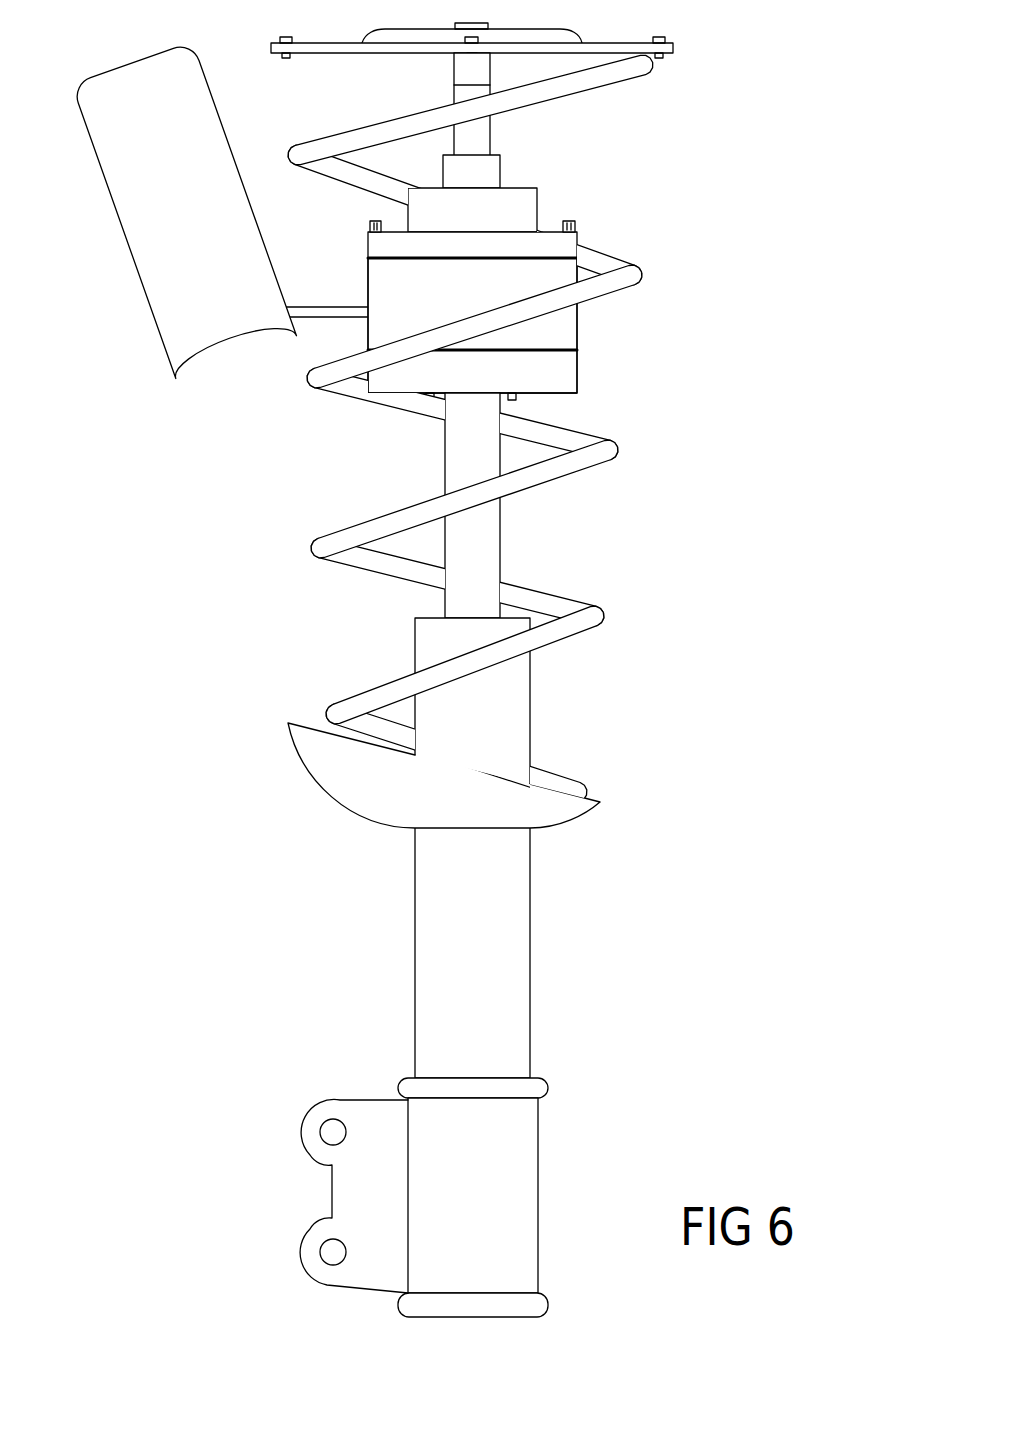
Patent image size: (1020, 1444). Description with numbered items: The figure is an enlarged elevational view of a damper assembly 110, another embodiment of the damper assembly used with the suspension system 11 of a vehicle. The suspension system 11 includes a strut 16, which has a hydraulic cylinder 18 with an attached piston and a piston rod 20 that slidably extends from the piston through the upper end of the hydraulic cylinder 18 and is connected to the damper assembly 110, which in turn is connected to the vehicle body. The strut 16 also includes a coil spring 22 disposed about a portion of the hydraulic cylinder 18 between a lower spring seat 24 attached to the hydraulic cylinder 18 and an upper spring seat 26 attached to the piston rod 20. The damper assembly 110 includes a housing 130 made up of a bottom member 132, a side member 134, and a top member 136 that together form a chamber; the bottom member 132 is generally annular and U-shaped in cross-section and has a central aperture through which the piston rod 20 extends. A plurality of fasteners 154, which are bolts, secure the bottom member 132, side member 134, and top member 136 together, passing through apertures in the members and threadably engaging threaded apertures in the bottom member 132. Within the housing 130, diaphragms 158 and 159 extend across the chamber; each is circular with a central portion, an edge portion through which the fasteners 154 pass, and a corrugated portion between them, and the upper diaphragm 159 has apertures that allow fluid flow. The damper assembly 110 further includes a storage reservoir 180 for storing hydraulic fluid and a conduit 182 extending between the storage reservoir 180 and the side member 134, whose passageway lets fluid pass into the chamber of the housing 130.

The suspension system 11 is at (456, 855).
The strut 16 is at (439, 855).
The hydraulic cylinder 18 is at (518, 899).
The piston rod 20 is at (488, 560).
The coil spring 22 is at (608, 451).
The lower spring seat 24 is at (377, 783).
The upper spring seat 26 is at (673, 43).
The damper assembly 110 is at (444, 658).
The housing 130 is at (495, 233).
The bottom member 132 is at (562, 380).
The side member 134 is at (572, 328).
The top member 136 is at (562, 238).
The fasteners 154 is at (370, 221).
The diaphragm 158 is at (577, 352).
The upper diaphragm 159 is at (575, 257).
The storage reservoir 180 is at (190, 318).
The conduit 182 is at (337, 310).